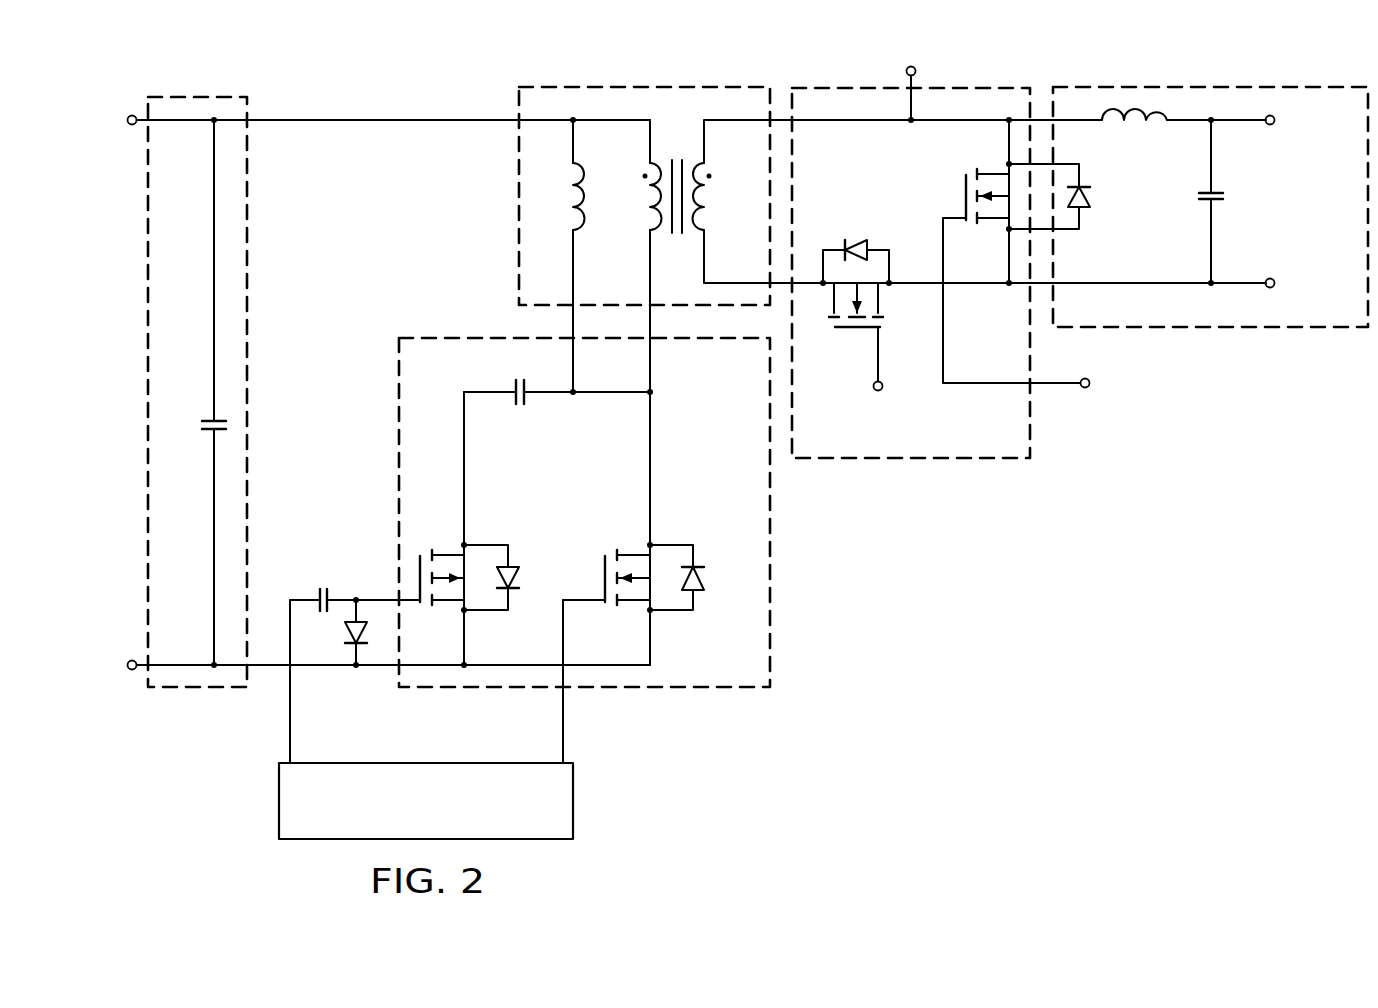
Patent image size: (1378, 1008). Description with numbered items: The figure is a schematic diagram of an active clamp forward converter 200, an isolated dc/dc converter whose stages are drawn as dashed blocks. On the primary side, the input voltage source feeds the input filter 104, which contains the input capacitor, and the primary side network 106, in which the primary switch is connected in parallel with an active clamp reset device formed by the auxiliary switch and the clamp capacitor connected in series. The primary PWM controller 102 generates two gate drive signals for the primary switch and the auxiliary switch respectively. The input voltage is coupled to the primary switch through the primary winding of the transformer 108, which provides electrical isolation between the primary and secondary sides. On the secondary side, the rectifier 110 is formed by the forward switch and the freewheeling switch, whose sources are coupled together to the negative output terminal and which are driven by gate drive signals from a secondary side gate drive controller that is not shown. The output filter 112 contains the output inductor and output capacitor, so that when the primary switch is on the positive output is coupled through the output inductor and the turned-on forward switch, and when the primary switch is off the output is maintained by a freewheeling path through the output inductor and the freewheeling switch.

The active clamp forward converter 200 is at (912, 720).
The primary side pulse width modulation controller 102 is at (278, 800).
The input filter 104 is at (187, 688).
The primary side network 106 is at (610, 688).
The transformer 108 is at (627, 87).
The rectifier 110 is at (925, 459).
The output filter 112 is at (1210, 328).